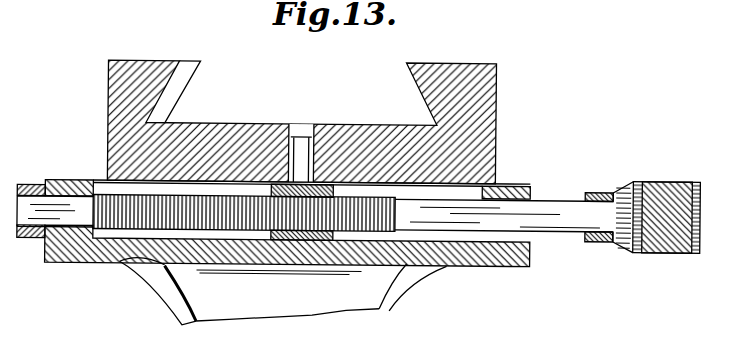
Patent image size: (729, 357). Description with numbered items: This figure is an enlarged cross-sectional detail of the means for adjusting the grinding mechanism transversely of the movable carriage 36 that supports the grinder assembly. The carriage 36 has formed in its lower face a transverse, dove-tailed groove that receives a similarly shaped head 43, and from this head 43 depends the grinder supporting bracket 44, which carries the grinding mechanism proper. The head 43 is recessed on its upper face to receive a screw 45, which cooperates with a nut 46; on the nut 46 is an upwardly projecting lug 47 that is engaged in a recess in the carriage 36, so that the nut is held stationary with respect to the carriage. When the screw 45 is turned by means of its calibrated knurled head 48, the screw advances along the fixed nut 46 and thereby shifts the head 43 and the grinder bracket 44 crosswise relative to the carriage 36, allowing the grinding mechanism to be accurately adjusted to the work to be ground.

The carriage 36 is at (490, 106).
The head 43 is at (95, 255).
The grinder supporting bracket 44 is at (308, 310).
The screw 45 is at (546, 205).
The nut 46 is at (297, 241).
The lug 47 is at (300, 146).
The calibrated knurled head 48 is at (661, 187).